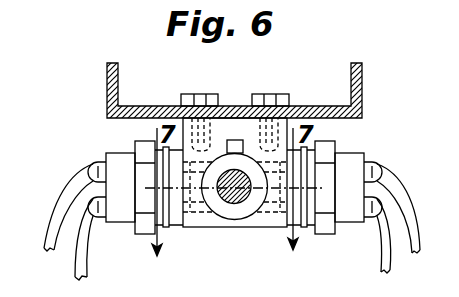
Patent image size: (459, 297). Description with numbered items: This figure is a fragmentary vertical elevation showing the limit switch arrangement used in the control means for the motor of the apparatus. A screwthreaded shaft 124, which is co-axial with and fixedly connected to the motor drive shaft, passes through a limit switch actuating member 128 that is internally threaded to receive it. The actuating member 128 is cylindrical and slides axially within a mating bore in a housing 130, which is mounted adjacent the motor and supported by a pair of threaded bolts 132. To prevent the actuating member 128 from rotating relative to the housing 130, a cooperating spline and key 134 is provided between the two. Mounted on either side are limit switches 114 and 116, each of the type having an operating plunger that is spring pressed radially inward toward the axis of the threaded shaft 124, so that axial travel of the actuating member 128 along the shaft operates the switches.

The limit switch 114 is at (118, 152).
The limit switch 116 is at (348, 152).
The screwthreaded shaft 124 is at (238, 205).
The limit switch actuating member 128 is at (216, 206).
The housing 130 is at (233, 106).
The threaded bolts 132 is at (193, 93).
The spline and key 134 is at (238, 139).